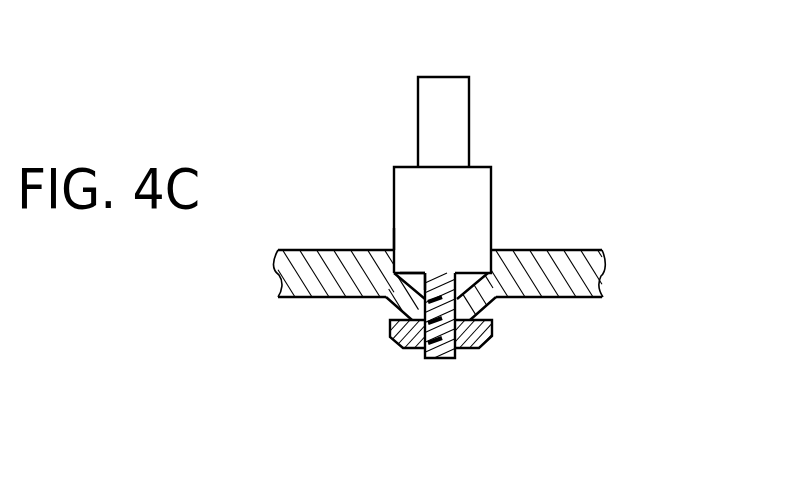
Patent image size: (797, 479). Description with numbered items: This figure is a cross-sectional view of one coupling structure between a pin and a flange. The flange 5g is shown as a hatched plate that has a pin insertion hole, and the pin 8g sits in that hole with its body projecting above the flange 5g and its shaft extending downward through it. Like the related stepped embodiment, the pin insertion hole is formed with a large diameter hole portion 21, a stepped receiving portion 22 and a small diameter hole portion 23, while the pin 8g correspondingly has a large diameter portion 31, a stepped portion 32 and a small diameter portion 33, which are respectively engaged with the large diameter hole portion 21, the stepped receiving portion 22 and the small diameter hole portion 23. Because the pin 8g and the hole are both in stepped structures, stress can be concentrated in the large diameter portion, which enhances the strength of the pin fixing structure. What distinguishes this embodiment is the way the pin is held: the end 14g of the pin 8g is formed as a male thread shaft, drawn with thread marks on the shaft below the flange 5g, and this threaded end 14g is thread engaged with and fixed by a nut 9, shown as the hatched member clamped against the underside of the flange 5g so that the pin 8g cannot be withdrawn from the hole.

The pin 8g is at (502, 143).
The flange 5g is at (343, 323).
The large diameter hole portion 21 is at (397, 260).
The stepped receiving portion 22 is at (426, 290).
The small diameter hole portion 23 is at (432, 285).
The nut 9 is at (461, 359).
The end of the pin 14g is at (423, 360).
The large diameter portion 31 is at (488, 270).
The stepped portion 32 is at (497, 297).
The small diameter portion 33 is at (480, 348).